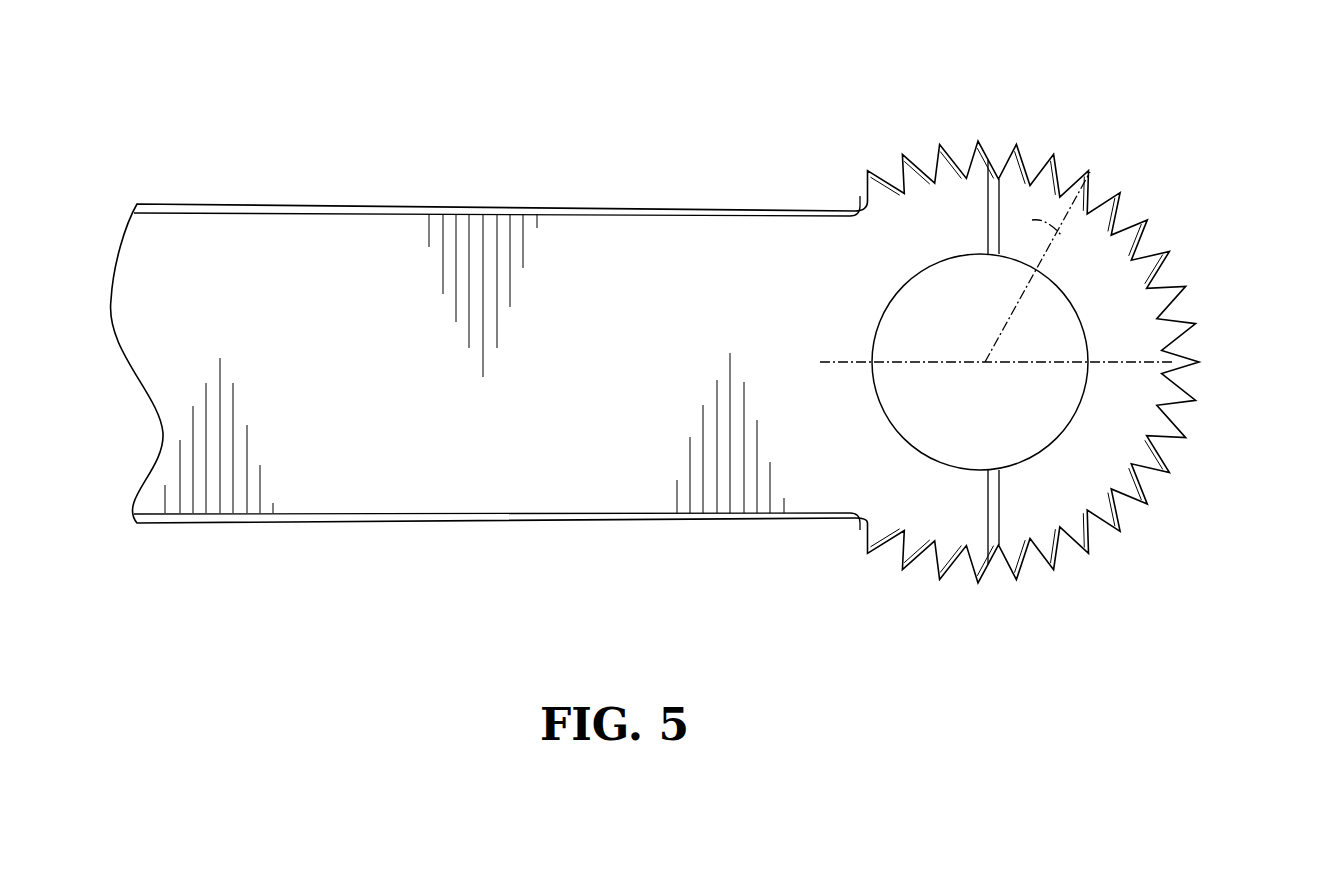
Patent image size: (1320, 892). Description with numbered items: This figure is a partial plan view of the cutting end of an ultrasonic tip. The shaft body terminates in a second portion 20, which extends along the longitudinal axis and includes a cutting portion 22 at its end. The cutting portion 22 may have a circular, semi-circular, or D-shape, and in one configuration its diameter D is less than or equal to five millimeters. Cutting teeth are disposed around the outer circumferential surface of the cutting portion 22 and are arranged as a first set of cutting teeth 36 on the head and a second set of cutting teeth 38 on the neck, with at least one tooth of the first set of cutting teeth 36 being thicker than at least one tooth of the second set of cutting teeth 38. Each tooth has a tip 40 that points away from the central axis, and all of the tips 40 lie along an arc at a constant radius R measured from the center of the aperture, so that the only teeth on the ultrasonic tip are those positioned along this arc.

The second portion 20 is at (628, 538).
The cutting portion 22 is at (1137, 92).
The first set of cutting teeth 36 is at (1214, 341).
The second set of cutting teeth 38 is at (916, 136).
The tip 40 is at (1017, 146).